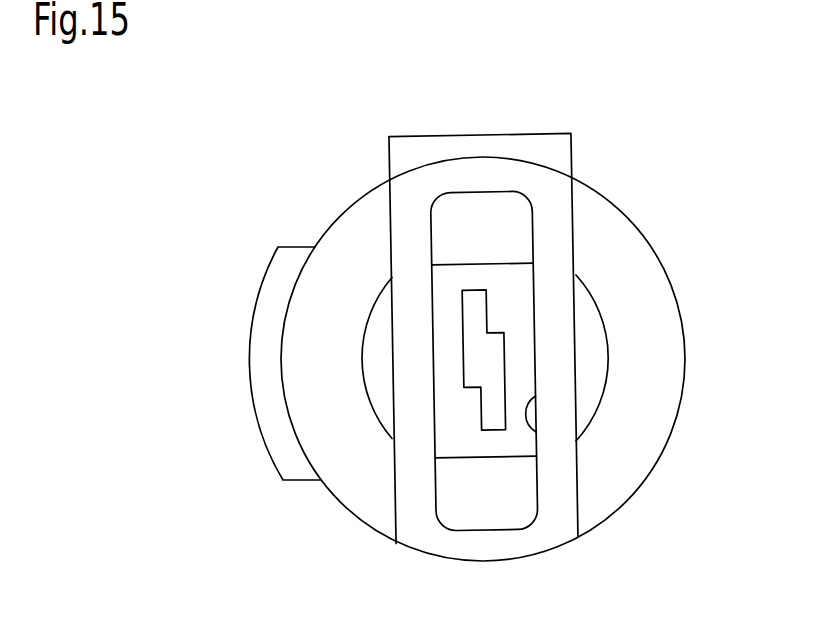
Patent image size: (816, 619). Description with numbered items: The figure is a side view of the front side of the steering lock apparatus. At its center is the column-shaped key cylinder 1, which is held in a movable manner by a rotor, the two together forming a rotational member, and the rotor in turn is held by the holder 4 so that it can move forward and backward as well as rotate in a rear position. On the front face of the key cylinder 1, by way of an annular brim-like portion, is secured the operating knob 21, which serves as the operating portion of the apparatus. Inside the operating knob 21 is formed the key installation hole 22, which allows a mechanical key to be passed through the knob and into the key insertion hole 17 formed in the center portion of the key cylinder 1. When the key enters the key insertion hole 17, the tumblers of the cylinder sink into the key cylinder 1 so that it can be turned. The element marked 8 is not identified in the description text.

The key cylinder 1 is at (380, 385).
The holder 4 is at (363, 237).
The projection 8 is at (273, 385).
The key insertion hole 17 is at (480, 362).
The operating knob 21 is at (553, 222).
The key installation hole 22 is at (527, 407).